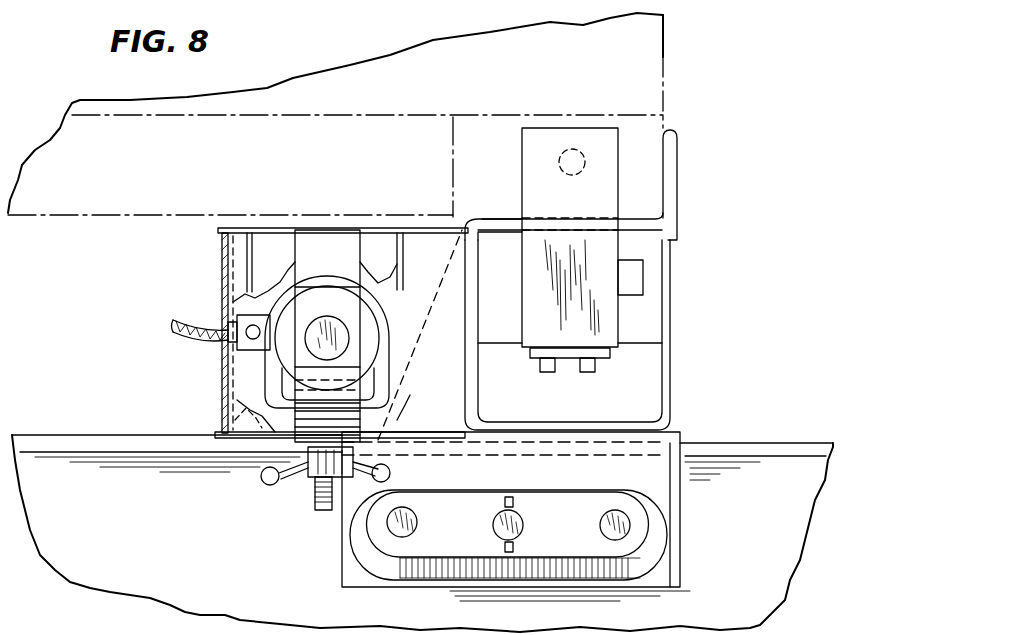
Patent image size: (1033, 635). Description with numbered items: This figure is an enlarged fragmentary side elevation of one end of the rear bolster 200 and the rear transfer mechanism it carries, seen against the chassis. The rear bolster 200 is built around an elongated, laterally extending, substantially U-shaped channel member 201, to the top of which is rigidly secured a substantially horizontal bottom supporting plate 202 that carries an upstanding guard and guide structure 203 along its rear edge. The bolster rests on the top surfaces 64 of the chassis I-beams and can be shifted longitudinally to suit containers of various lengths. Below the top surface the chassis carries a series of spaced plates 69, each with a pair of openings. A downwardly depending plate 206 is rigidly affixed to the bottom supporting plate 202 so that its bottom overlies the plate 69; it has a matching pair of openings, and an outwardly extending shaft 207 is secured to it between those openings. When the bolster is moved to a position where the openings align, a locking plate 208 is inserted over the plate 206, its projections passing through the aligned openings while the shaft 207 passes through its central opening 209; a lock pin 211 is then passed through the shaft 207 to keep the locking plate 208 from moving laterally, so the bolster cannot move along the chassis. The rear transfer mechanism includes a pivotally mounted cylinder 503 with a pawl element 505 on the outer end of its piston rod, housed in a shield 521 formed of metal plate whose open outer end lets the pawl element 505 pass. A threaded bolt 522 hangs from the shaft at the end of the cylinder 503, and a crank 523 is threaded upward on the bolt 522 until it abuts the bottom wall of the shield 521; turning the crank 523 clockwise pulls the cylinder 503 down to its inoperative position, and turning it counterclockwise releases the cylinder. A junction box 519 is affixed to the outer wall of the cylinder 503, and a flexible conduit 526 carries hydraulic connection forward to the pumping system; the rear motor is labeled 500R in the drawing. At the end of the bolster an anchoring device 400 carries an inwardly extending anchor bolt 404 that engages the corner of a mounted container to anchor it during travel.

The top surfaces 64 is at (750, 443).
The plate 69 is at (680, 562).
The rear bolster 200 is at (686, 108).
The channel member 201 is at (668, 330).
The bottom supporting plate 202 is at (492, 220).
The guard and guide structure 203 is at (678, 172).
The downwardly depending plate 206 is at (360, 540).
The outwardly extending shaft 207 is at (494, 530).
The locking plate 208 is at (453, 485).
The central opening 209 is at (525, 522).
The lock pin 211 is at (512, 497).
The anchoring device 400 is at (565, 130).
The anchor bolt 404 is at (582, 175).
The casing 500R is at (246, 303).
The cylinder 503 is at (372, 300).
The pawl element 505 is at (331, 228).
The junction box 519 is at (240, 346).
The shield 521 is at (221, 243).
The threaded bolt 522 is at (315, 500).
The crank 523 is at (264, 480).
The flexible conduit 526 is at (180, 334).